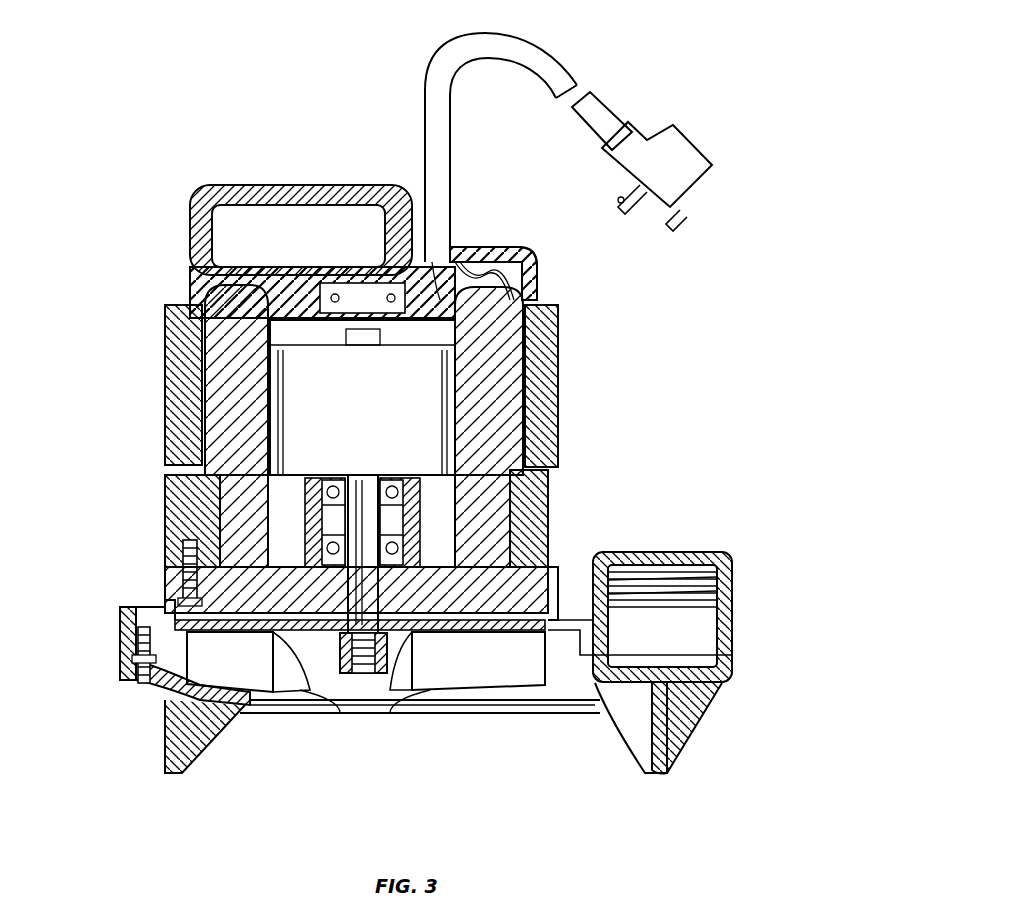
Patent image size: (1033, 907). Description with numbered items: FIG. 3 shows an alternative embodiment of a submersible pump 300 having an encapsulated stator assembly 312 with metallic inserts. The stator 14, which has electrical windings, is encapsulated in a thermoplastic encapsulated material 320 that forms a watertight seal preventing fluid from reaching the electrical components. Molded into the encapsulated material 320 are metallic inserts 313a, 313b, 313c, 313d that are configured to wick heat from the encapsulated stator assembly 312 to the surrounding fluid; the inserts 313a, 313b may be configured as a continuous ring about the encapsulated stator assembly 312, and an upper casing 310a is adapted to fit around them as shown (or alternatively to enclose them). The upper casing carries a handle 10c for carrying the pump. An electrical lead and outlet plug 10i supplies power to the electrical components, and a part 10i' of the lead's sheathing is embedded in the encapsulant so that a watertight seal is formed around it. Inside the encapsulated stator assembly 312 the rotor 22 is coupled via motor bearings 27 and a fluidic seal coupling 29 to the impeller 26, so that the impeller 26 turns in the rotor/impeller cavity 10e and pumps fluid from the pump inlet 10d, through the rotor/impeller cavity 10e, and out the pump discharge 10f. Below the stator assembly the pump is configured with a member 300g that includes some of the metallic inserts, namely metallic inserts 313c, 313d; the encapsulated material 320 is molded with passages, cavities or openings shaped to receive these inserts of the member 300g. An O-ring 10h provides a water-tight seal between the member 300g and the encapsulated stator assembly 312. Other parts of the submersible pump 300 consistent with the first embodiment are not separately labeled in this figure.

The submersible pump 300 is at (148, 142).
The handle 10c is at (232, 186).
The electrical lead and outlet plug 10i is at (573, 147).
The part of the sheathing of the electrical lead 10i' is at (412, 224).
The encapsulated material 320 is at (500, 248).
The upper casing 310a is at (535, 272).
The metallic insert 313a is at (165, 335).
The metallic insert 313b is at (545, 443).
The metallic insert 313c is at (210, 525).
The metallic insert 313d is at (545, 517).
The encapsulated stator assembly 312 is at (185, 485).
The stator 14 is at (495, 375).
The motor rotor 22 is at (362, 397).
The motor bearings 27 is at (470, 480).
The member 300g is at (252, 605).
The O-ring 10h is at (470, 575).
The rotor/impeller cavity 10e is at (300, 683).
The fluidic seal coupling 29 is at (368, 675).
The impeller 26 is at (470, 700).
The pump inlet 10d is at (340, 713).
The pump discharge 10f is at (683, 542).